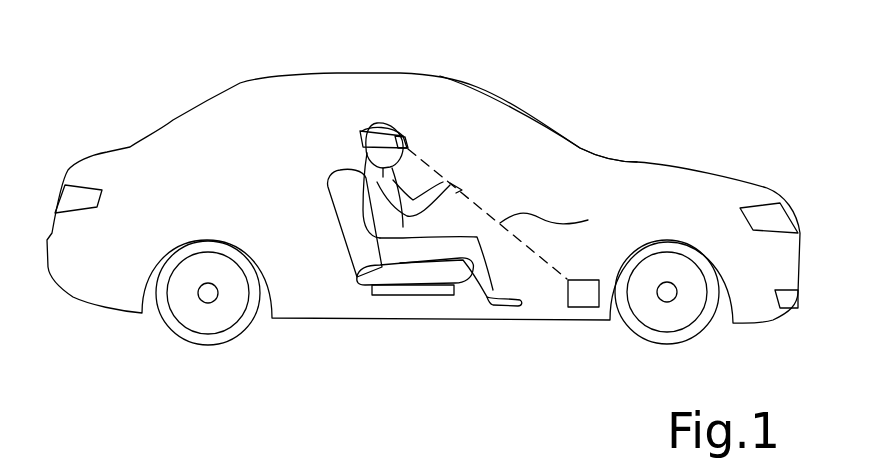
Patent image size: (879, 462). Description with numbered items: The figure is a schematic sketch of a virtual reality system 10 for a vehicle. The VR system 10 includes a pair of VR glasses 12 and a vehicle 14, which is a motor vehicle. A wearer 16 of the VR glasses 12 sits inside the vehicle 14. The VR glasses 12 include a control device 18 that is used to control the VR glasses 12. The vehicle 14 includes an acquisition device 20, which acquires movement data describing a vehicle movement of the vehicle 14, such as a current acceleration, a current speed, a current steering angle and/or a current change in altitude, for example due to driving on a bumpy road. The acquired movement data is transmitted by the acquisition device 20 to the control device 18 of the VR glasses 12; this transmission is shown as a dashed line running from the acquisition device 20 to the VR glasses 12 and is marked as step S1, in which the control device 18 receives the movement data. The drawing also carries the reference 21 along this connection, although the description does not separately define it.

The virtual reality system 10 is at (533, 98).
The VR glasses 12 is at (408, 147).
The vehicle 14 is at (637, 160).
The wearer 16 is at (375, 122).
The control device 18 is at (367, 137).
The acquisition device 20 is at (580, 307).
The signal connection 21 is at (562, 219).
The receiving step S1 is at (487, 214).